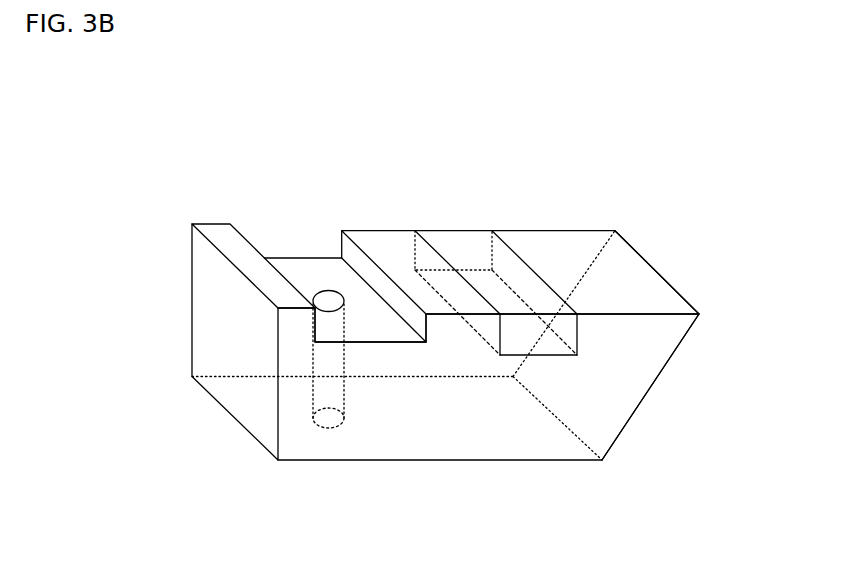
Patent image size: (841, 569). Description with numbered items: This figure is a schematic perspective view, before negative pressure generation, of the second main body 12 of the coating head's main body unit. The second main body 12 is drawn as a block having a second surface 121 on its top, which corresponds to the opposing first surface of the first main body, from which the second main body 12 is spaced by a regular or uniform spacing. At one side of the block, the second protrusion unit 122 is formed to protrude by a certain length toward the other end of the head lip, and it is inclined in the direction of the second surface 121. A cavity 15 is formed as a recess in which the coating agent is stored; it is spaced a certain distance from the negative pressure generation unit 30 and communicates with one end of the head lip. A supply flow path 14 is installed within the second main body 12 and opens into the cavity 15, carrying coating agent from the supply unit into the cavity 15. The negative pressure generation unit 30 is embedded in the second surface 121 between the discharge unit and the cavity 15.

The second main body 12 is at (450, 425).
The second surface 121 is at (548, 247).
The second protrusion unit 122 is at (667, 333).
The supply flow path 14 is at (325, 307).
The cavity 15 is at (296, 266).
The negative pressure generation unit 30 is at (553, 347).